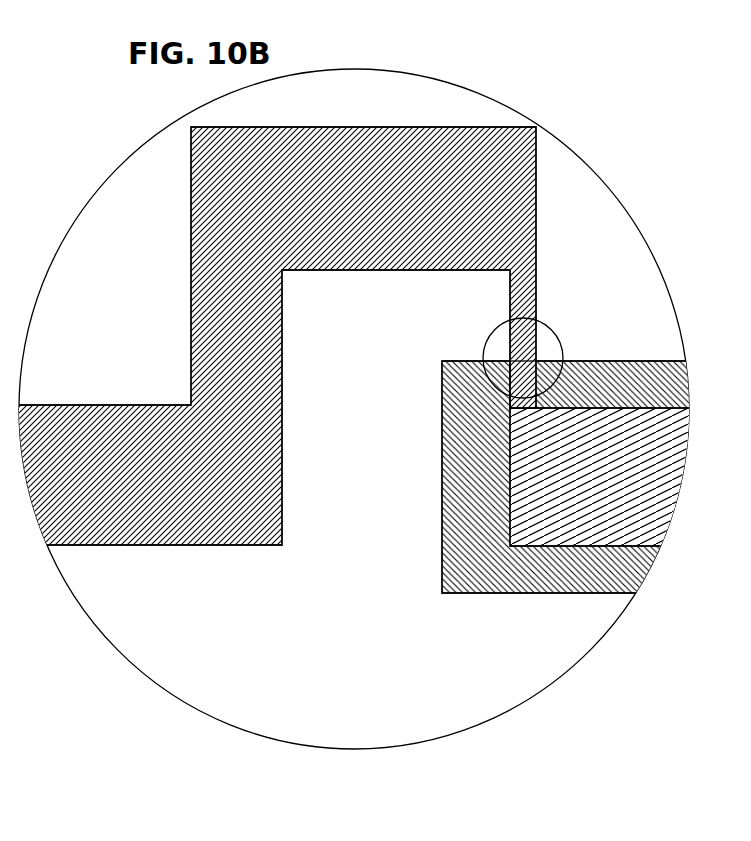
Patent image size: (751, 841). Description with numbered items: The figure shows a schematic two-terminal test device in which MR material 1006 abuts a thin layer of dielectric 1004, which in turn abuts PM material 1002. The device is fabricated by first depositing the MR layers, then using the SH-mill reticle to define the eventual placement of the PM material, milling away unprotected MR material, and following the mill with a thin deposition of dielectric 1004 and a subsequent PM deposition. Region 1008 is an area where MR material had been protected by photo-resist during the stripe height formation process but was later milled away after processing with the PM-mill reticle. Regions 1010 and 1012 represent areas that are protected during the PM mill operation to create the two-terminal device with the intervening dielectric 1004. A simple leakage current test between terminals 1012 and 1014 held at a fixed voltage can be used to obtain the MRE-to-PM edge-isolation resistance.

The PM material 1002 is at (518, 343).
The dielectric 1004 is at (512, 360).
The MR material 1006 is at (520, 385).
The region 1008 is at (462, 563).
The region 1010 is at (455, 148).
The region 1012 is at (612, 523).
The terminal 1014 is at (344, 409).